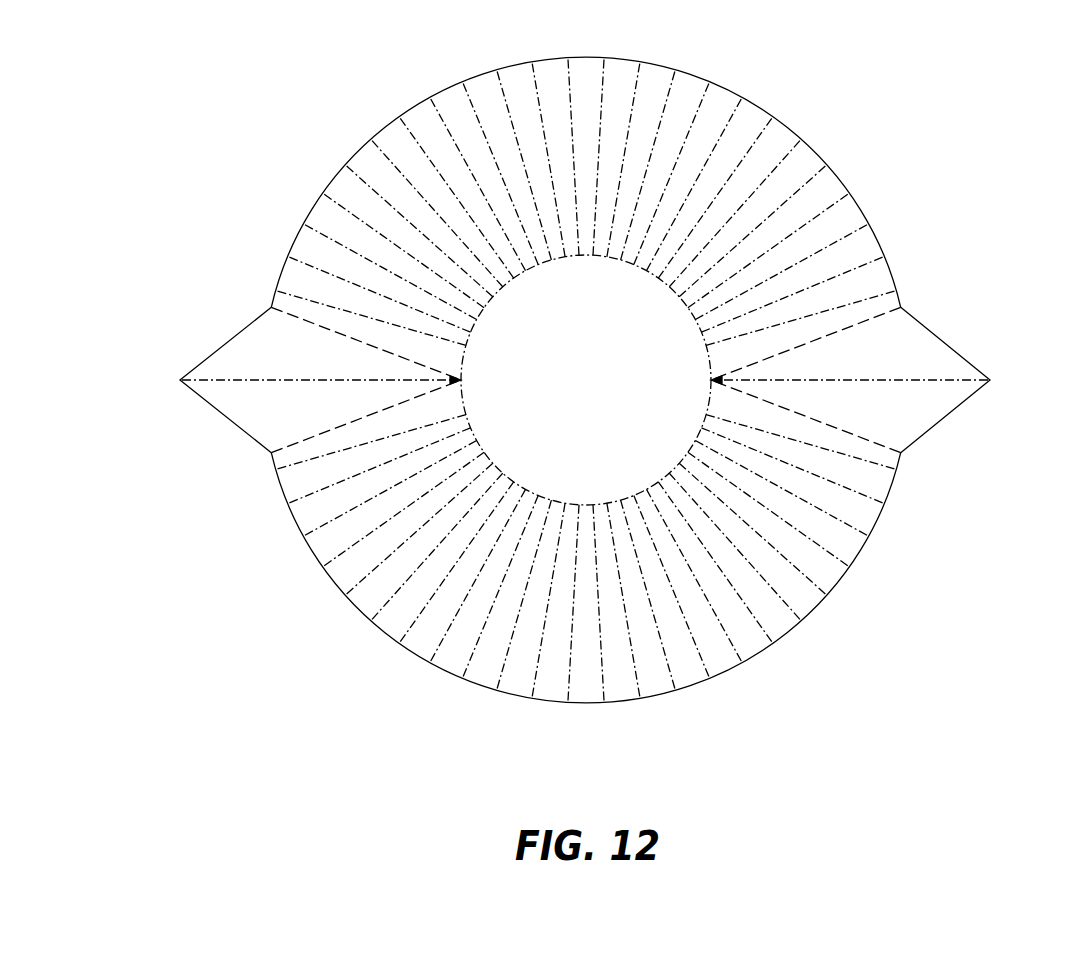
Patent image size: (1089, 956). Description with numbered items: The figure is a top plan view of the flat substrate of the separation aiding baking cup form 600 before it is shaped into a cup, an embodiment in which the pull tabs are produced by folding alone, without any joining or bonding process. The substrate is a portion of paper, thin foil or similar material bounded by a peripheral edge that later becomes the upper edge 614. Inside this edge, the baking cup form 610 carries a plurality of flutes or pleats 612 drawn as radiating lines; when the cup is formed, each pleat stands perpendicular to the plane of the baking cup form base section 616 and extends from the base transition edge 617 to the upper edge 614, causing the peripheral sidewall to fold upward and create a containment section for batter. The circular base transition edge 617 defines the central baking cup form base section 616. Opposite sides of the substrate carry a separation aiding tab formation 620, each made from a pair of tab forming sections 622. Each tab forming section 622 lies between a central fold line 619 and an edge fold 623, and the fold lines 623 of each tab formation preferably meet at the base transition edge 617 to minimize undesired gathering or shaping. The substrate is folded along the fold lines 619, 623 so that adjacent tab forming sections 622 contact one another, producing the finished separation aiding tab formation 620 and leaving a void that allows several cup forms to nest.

The separation aiding baking cup form 600 is at (278, 112).
The baking cup form 610 is at (352, 612).
The pleats 612 is at (790, 557).
The upper edge 614 is at (367, 143).
The baking cup form base section 616 is at (610, 399).
The base transition edge 617 is at (480, 316).
The central fold line 619 is at (881, 383).
The separation aiding tab formation 620 is at (255, 308).
The tab forming sections 622 is at (882, 347).
The edge fold 623 is at (852, 330).